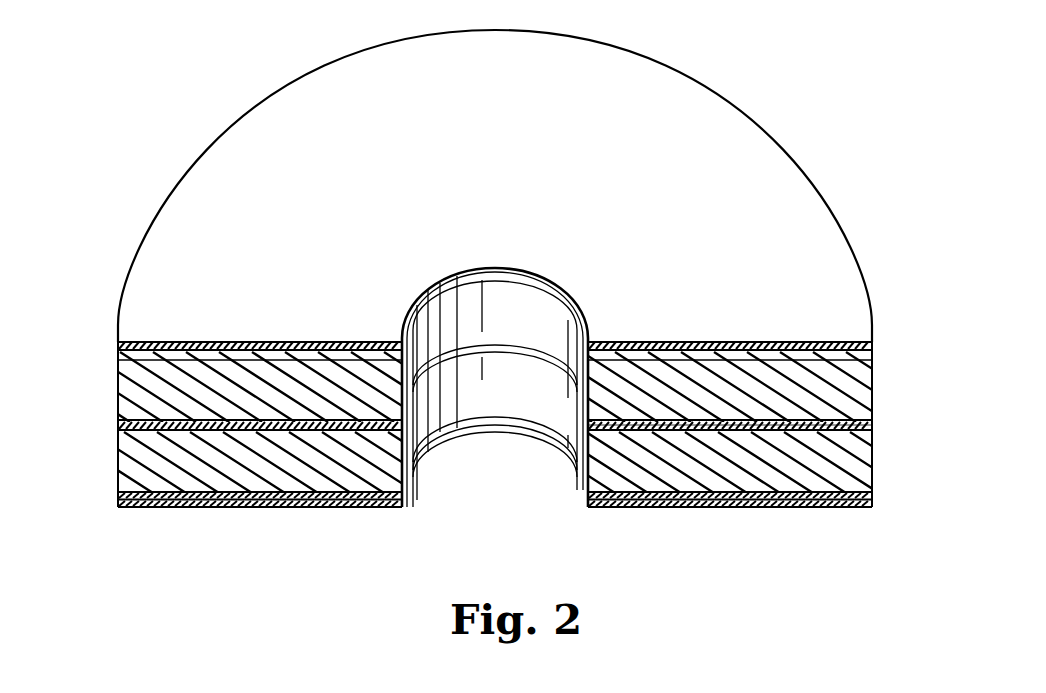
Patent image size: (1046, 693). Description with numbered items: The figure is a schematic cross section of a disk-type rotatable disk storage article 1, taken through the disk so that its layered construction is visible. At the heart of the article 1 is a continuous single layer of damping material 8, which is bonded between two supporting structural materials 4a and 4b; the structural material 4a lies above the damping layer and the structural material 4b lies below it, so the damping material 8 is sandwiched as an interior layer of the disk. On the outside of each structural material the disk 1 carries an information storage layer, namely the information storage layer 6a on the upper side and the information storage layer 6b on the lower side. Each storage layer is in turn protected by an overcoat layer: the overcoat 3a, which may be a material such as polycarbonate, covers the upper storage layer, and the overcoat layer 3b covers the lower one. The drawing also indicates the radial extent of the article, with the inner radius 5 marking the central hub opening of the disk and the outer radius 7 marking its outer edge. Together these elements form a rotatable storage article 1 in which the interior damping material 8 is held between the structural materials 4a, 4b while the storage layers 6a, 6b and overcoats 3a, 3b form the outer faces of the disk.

The rotatable disk storage article 1 is at (752, 86).
The overcoat 3a is at (625, 103).
The overcoat layer 3b is at (343, 507).
The supporting structural material 4a is at (853, 371).
The supporting structural material 4b is at (857, 464).
The inner radius 5 is at (510, 400).
The information storage layer 6a is at (152, 350).
The information storage layer 6b is at (165, 500).
The outer radius 7 is at (117, 449).
The damping material 8 is at (845, 427).